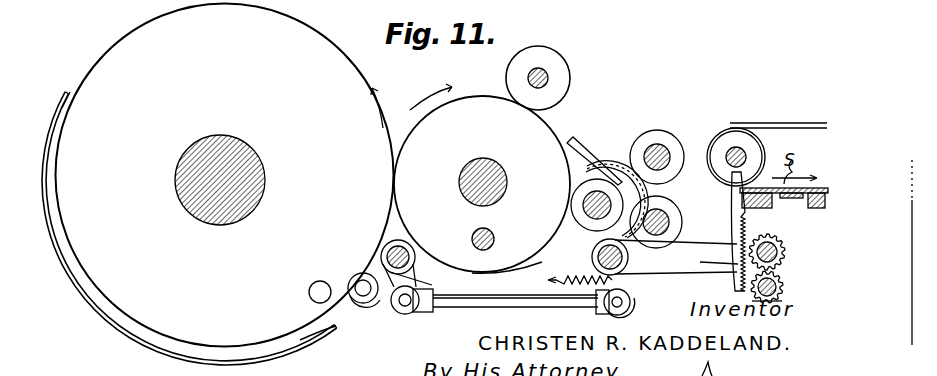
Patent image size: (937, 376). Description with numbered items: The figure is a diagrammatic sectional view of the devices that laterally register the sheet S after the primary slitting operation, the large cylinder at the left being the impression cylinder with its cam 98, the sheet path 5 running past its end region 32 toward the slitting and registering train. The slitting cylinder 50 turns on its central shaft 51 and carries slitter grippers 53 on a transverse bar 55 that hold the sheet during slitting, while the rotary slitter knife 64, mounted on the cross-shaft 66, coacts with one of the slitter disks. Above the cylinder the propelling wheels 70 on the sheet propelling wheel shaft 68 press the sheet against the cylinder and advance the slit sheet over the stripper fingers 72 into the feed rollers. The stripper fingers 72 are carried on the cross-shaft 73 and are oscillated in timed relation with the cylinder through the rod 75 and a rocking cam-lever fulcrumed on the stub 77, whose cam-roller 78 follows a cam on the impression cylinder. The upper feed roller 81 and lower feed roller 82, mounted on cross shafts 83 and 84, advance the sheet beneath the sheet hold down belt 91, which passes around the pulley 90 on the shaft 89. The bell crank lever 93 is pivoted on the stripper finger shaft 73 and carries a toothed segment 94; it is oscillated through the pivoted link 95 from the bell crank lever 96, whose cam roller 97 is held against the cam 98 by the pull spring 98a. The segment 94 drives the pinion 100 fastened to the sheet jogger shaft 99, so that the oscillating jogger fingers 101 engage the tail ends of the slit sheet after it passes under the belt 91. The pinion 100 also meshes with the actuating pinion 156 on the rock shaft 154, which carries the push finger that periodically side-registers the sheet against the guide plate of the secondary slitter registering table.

The sheet 5 is at (148, 348).
The apron end 32 is at (326, 328).
The slitting cylinder 50 is at (482, 184).
The central shaft 51 is at (481, 160).
The slitter grippers 53 is at (521, 262).
The transverse bar 55 is at (473, 236).
The rotary slitter knife 64 is at (588, 238).
The cross-shaft 66 is at (600, 190).
The sheet propelling wheel shaft 68 is at (530, 72).
The propelling wheels 70 is at (570, 72).
The stripper fingers 72 is at (573, 140).
The cross-shaft 73 is at (628, 257).
The rod 75 is at (527, 297).
The stub 77 is at (412, 240).
The cam-roller 78 is at (408, 314).
The upper feed roller 81 is at (655, 130).
The lower feed roller 82 is at (678, 208).
The cross shaft 83 is at (662, 150).
The cross shaft 84 is at (668, 224).
The shaft 89 is at (730, 150).
The pulley 90 is at (755, 120).
The sheet hold down belt 91 is at (778, 116).
The bell crank lever 93 is at (700, 272).
The toothed segment 94 is at (719, 263).
The pivoted link 95 is at (455, 308).
The bell crank lever 96 is at (400, 278).
The cam roller 97 is at (362, 303).
The cam 98 is at (276, 344).
The pull spring 98a is at (588, 276).
The sheet jogger shaft 99 is at (777, 250).
The pinion 100 is at (778, 238).
The jogger fingers 101 is at (733, 205).
The rock shaft 154 is at (776, 290).
The actuating pinion 156 is at (780, 278).